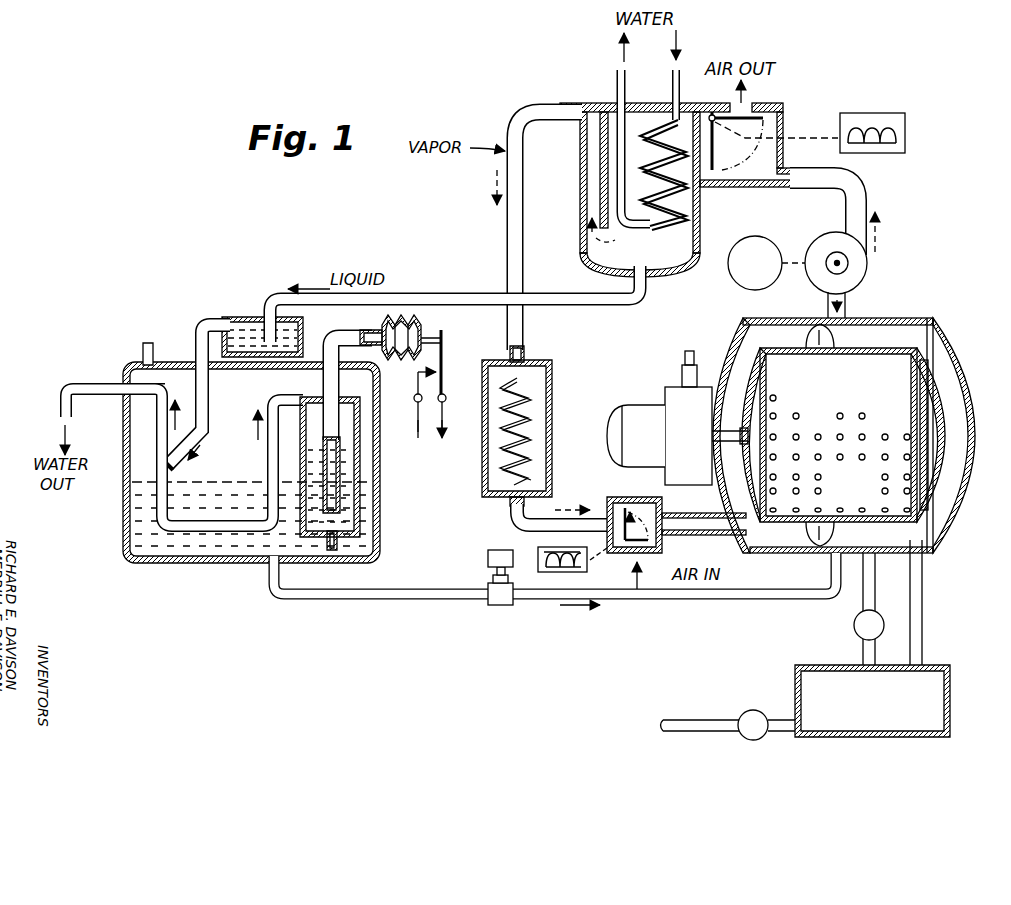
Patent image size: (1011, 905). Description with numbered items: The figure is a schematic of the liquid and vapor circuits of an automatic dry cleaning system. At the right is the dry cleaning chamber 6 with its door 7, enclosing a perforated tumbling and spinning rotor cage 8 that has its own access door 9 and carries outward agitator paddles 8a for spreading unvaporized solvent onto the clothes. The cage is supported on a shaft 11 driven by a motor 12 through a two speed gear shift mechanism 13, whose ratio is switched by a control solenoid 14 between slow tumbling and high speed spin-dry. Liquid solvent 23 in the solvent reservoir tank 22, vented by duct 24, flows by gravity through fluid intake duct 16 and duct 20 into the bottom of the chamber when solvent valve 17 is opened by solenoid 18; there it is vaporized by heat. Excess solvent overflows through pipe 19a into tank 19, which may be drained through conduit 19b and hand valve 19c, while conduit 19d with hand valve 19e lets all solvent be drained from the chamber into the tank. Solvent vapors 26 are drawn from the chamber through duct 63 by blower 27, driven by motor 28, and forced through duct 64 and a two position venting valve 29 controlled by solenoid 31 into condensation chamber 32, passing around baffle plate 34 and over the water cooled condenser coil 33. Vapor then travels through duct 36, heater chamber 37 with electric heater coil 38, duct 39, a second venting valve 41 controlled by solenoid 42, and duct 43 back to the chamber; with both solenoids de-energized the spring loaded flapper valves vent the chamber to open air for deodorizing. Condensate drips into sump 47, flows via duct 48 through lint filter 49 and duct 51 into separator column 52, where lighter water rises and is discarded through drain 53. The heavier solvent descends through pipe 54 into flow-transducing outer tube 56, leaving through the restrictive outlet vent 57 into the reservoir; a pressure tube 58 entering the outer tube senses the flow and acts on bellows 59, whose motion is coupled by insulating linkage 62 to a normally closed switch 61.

The dry cleaning chamber 6 is at (930, 320).
The door 7 is at (958, 362).
The perforated tumbling and spinning rotor cage 8 is at (897, 348).
The agitator paddle 8a is at (817, 335).
The access door 9 is at (945, 420).
The shaft 11 is at (715, 434).
The motor 12 is at (640, 404).
The two speed gear shift mechanism 13 is at (672, 392).
The control solenoid 14 is at (688, 355).
The fluid intake duct 16 is at (703, 600).
The solvent valve 17 is at (500, 606).
The solenoid 18 is at (488, 557).
The tank 19 is at (950, 692).
The pipe 19a is at (922, 620).
The conduit 19b is at (778, 733).
The hand valve 19c is at (756, 710).
The conduit 19d is at (863, 648).
The hand valve 19e is at (854, 627).
The duct 20 is at (433, 600).
The solvent reservoir tank 22 is at (172, 567).
The solvent 23 is at (140, 518).
The duct 24 is at (145, 348).
The solvent vapors 26 is at (855, 330).
The blower 27 is at (868, 263).
The motor 28 is at (765, 240).
The two position venting valve 29 is at (770, 117).
The solenoid 31 is at (883, 112).
The condensation chamber 32 is at (580, 172).
The water cooled condenser coil 33 is at (650, 118).
The baffle plate 34 is at (600, 202).
The duct 36 is at (507, 245).
The heater chamber 37 is at (552, 432).
The electric heater coil 38 is at (533, 412).
The duct 39 is at (548, 504).
The two position venting valve 41 is at (662, 540).
The solenoid 42 is at (588, 568).
The duct 43 is at (706, 518).
The sump 47 is at (660, 265).
The duct 48 is at (455, 302).
The lint filter 49 is at (300, 332).
The duct 51 is at (210, 398).
The separator column 52 is at (158, 425).
The drain 53 is at (100, 384).
The pipe 54 is at (243, 533).
The flow-transducing outer tube 56 is at (362, 460).
The outlet vent 57 is at (345, 550).
The pressure tube 58 is at (342, 378).
The pneumatic pressure responsive bellows 59 is at (422, 327).
The normally closed switch 61 is at (444, 372).
The insulating linkage 62 is at (445, 342).
The duct 63 is at (850, 296).
The duct 64 is at (860, 192).